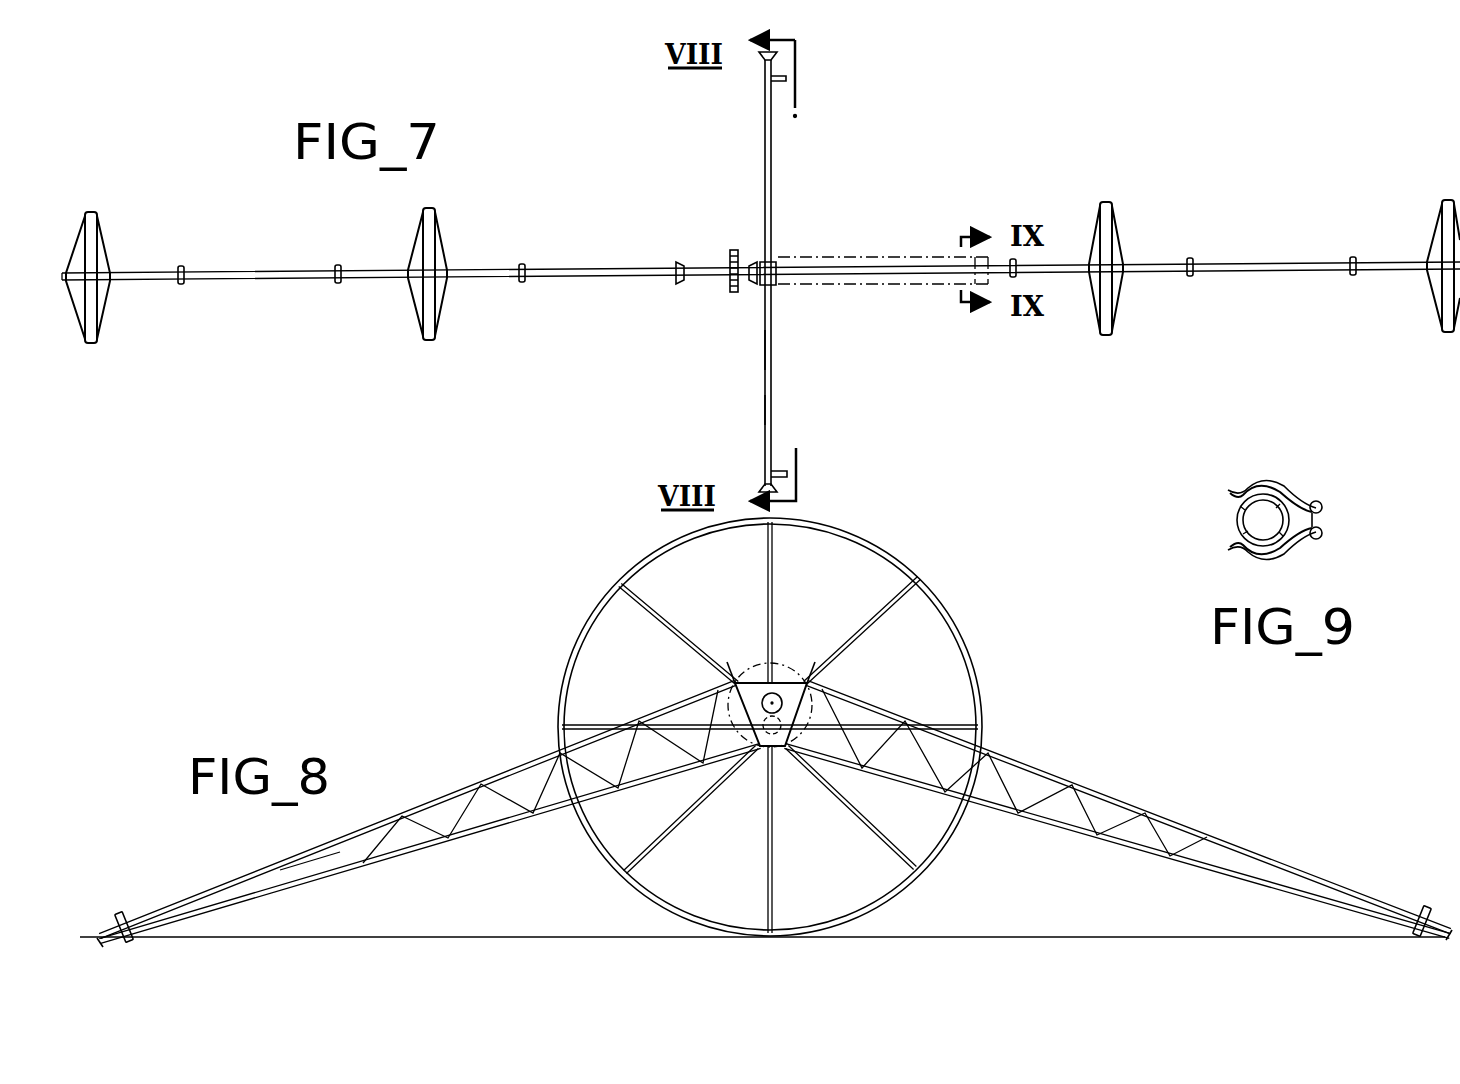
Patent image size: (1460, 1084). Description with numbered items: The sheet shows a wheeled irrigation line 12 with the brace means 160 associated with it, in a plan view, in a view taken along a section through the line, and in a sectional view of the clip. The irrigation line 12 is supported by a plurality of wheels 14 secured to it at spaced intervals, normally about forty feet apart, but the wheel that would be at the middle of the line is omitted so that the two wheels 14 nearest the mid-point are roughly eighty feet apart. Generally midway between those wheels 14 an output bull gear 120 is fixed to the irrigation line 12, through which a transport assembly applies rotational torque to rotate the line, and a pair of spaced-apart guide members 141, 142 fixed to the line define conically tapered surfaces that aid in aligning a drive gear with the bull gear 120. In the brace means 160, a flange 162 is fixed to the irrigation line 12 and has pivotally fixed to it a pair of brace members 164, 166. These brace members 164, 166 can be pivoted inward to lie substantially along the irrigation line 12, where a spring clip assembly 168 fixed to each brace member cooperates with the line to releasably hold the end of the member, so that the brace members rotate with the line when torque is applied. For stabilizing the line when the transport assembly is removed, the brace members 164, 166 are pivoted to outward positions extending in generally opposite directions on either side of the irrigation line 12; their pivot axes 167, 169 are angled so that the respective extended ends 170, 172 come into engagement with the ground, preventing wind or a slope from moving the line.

In FIG. 7, the irrigation line 12 is at (1252, 262).
In FIG. 8, the irrigation line 12 is at (783, 696).
In FIG. 9, the irrigation line 12 is at (1238, 520).
In FIG. 7, the wheels 14 is at (425, 315).
In FIG. 8, the wheels 14 is at (948, 604).
In FIG. 7, the output bull gear 120 is at (734, 292).
In FIG. 8, the output bull gear 120 is at (751, 668).
In FIG. 7, the guide member 141 is at (752, 262).
In FIG. 7, the guide member 142 is at (679, 262).
In FIG. 7, the brace means 160 is at (760, 348).
In FIG. 8, the brace means 160 is at (500, 752).
In FIG. 7, the flange 162 is at (776, 284).
In FIG. 8, the flange 162 is at (790, 708).
In FIG. 7, the brace member 164 is at (766, 409).
In FIG. 8, the brace member 164 is at (308, 854).
In FIG. 9, the brace member 164 is at (1324, 502).
In FIG. 7, the brace member 166 is at (775, 140).
In FIG. 8, the brace member 166 is at (1172, 818).
In FIG. 8, the pivot axis 167 is at (727, 667).
In FIG. 7, the spring clip assembly 168 is at (782, 478).
In FIG. 8, the spring clip assembly 168 is at (132, 914).
In FIG. 9, the spring clip assembly 168 is at (1254, 488).
In FIG. 8, the pivot axis 169 is at (812, 666).
In FIG. 7, the extended end 170 is at (766, 486).
In FIG. 8, the extended end 170 is at (100, 934).
In FIG. 7, the extended end 172 is at (760, 60).
In FIG. 8, the extended end 172 is at (1446, 928).